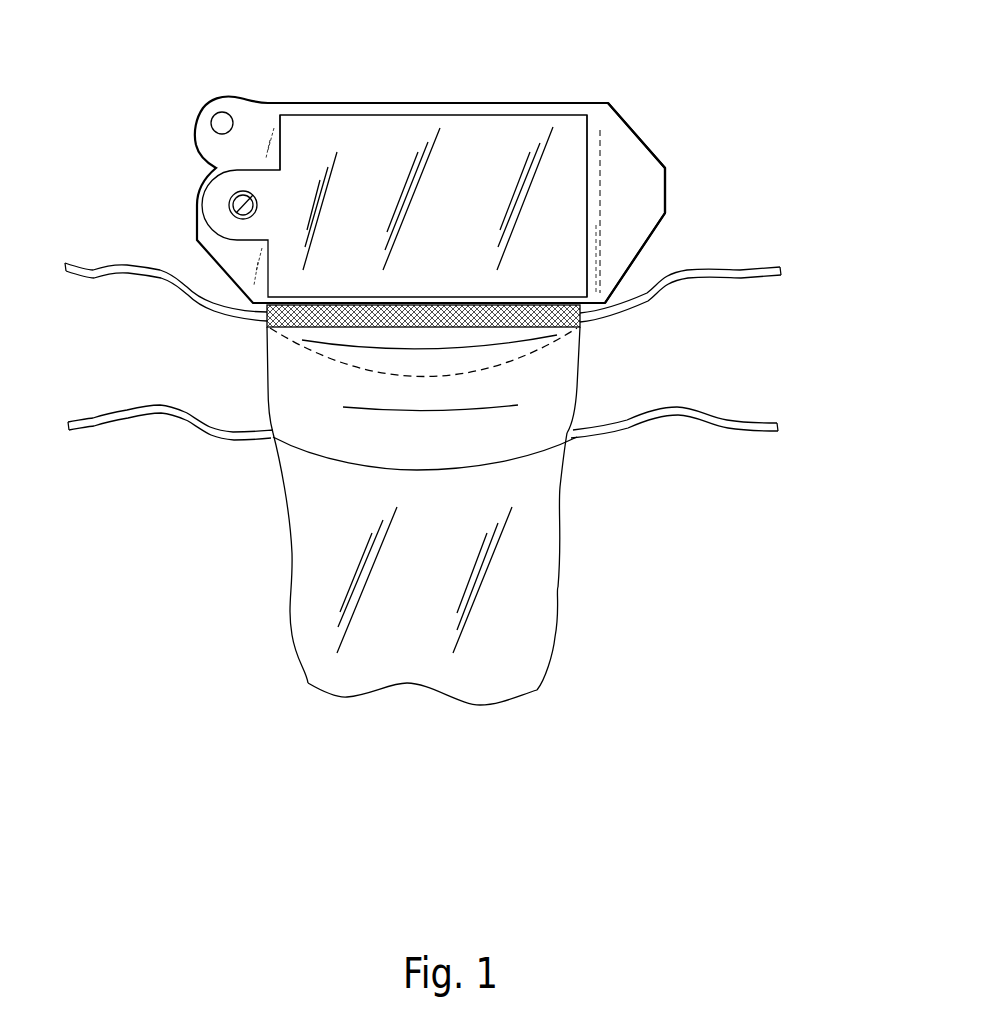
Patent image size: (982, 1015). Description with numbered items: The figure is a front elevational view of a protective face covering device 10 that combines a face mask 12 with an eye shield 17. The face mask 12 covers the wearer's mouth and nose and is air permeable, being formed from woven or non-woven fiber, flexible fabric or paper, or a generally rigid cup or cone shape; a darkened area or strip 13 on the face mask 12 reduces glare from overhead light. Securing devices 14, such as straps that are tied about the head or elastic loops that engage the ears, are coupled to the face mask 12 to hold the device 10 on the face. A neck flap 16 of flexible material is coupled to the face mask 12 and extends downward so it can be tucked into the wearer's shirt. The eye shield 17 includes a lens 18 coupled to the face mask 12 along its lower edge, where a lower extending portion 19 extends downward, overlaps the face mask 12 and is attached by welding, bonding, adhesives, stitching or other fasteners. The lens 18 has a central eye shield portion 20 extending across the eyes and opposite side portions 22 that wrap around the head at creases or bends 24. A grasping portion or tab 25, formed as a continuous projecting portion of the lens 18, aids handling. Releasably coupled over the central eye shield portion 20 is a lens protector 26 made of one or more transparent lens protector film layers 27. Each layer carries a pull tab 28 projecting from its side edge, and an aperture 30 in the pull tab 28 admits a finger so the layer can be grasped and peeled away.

The protective face covering device 10 is at (760, 373).
The face mask 12 is at (590, 363).
The darkened area or strip 13 is at (262, 336).
The securing devices 14 is at (670, 280).
The neck flap 16 is at (560, 590).
The eye shield 17 is at (645, 110).
The lens 18 is at (486, 98).
The lower extending portion 19 is at (302, 357).
The central eye shield portion 20 is at (390, 103).
The side portions 22 is at (662, 160).
The creases or bends 24 is at (289, 127).
The grasping portion or tab 25 is at (223, 98).
The lens protector 26 is at (567, 267).
The lens protector film layers 27 is at (593, 233).
The pull tab 28 is at (213, 227).
The aperture 30 is at (252, 197).